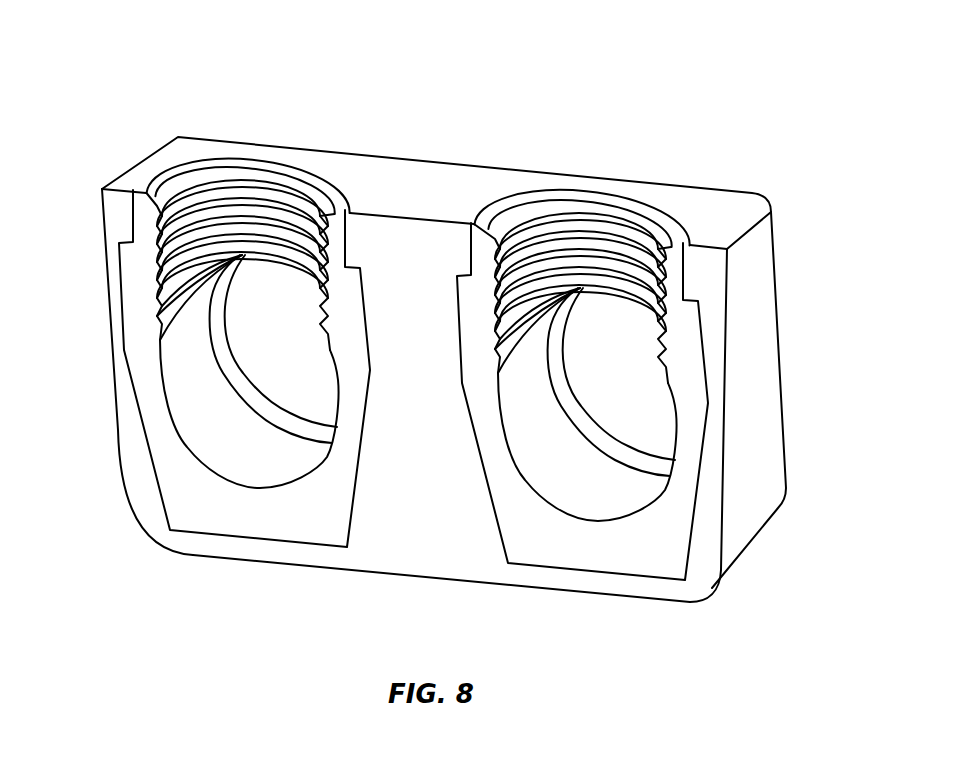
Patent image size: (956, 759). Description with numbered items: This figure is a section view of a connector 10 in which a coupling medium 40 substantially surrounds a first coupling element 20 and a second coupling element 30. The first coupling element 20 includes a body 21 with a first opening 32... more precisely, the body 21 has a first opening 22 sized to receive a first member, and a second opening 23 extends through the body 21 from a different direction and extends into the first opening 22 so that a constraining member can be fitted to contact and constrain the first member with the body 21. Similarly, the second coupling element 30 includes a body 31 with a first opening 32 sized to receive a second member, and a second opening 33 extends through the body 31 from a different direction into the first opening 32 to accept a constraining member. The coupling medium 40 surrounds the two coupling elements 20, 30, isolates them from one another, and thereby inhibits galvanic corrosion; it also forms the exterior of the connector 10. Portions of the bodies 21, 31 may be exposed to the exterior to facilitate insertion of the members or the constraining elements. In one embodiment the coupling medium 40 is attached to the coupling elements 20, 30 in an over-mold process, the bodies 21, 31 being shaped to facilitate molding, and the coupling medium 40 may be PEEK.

The connector 10 is at (557, 100).
The first coupling element 20 is at (677, 220).
The body 21 is at (695, 405).
The first opening 22 is at (652, 432).
The second opening 23 is at (575, 212).
The second coupling element 30 is at (143, 223).
The body 31 is at (177, 468).
The first opening 32 is at (210, 402).
The second opening 33 is at (215, 175).
The coupling medium 40 is at (418, 547).